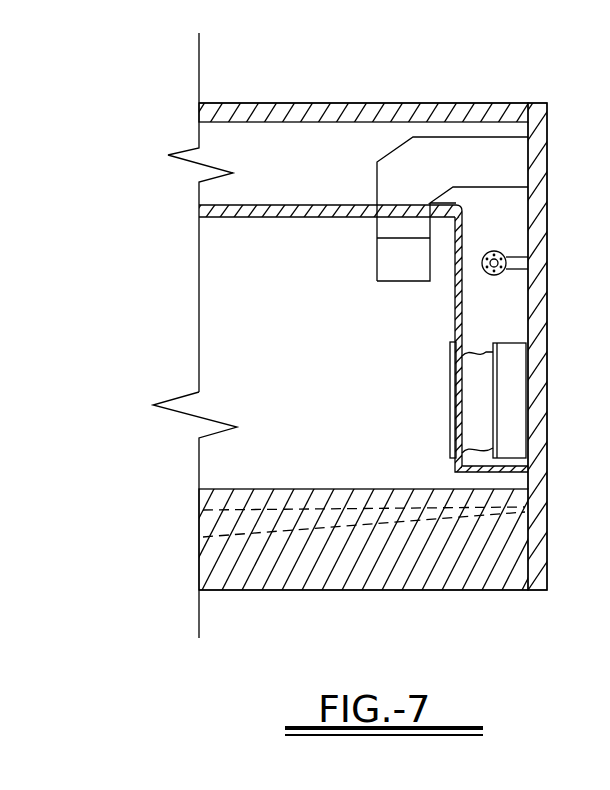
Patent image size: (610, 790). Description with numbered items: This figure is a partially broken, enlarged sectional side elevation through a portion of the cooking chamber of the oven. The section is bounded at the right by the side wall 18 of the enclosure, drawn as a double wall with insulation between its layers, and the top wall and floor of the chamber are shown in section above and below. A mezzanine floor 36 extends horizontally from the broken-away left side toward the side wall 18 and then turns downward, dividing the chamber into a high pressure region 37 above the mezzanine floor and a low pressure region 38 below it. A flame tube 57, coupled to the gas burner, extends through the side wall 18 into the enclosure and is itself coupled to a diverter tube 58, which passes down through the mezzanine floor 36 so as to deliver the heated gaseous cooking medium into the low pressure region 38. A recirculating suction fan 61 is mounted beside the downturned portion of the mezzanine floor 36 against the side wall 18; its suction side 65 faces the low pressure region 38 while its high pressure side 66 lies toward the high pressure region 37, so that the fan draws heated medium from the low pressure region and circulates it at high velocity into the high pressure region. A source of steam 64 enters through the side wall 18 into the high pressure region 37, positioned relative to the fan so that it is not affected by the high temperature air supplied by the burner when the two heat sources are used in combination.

The side wall 18 is at (550, 474).
The mezzanine floor 36 is at (455, 312).
The high pressure region 37 is at (292, 160).
The low pressure region 38 is at (320, 461).
The flame tube 57 is at (463, 138).
The diverter tube 58 is at (393, 267).
The recirculating suction fan 61 is at (480, 402).
The source of steam 64 is at (500, 253).
The suction side 65 is at (440, 353).
The high pressure side 66 is at (518, 343).